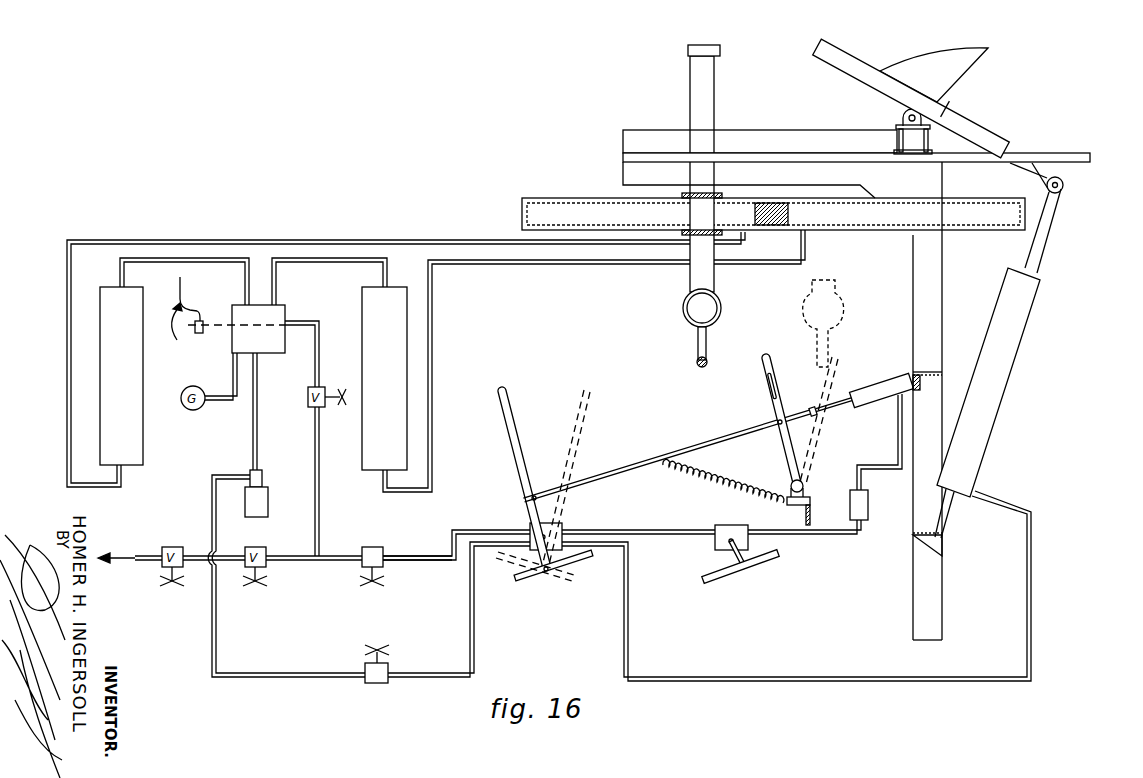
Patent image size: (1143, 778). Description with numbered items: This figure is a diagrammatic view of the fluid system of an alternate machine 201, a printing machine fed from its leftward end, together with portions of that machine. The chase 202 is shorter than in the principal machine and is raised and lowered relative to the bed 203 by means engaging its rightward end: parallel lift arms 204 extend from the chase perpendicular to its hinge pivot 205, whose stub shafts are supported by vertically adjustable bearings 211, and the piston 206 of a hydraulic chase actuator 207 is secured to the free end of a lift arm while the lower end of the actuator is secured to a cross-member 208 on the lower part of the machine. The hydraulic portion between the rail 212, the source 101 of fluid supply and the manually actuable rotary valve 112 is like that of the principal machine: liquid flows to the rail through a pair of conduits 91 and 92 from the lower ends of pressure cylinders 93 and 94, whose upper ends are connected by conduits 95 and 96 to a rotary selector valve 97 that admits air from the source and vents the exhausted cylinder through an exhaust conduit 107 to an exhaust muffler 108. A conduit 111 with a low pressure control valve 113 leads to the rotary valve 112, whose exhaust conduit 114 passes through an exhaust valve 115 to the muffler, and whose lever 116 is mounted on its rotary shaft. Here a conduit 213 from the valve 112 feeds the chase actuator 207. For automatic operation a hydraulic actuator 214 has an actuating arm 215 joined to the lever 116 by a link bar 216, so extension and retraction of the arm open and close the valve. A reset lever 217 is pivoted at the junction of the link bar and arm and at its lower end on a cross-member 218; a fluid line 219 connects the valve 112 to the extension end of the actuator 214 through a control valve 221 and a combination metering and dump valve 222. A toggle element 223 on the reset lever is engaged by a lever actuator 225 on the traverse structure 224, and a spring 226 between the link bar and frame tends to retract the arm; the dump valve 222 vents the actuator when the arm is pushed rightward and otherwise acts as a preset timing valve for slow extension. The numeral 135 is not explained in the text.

The conduit 91 is at (118, 240).
The conduit 92 is at (499, 264).
The pressure cylinder 93 is at (140, 424).
The pressure cylinder 94 is at (363, 306).
The conduit 95 is at (195, 258).
The conduit 96 is at (340, 258).
The rotary actuated selector valve 97 is at (272, 355).
The source of air pressure 101 is at (274, 562).
The exhaust conduit 107 is at (257, 430).
The exhaust muffler 108 is at (268, 495).
The conduit 111 is at (415, 560).
The rotary valve 112 is at (530, 525).
The low pressure control valve 113 is at (372, 547).
The exhaust conduit 114 is at (275, 677).
The exhaust valve 115 is at (388, 680).
The lever 116 is at (510, 415).
The switch arm 135 is at (180, 318).
The alternate machine 201 is at (1000, 117).
The chase 202 is at (868, 72).
The bed 203 is at (632, 144).
The lift arm 204 is at (1002, 150).
The hinge pivot 205 is at (905, 118).
The piston 206 is at (1045, 220).
The hydraulic chase actuator 207 is at (1008, 345).
The cross-member 208 is at (942, 542).
The bearing 211 is at (918, 112).
The rail 212 is at (530, 198).
The conduit 213 is at (752, 677).
The hydraulic actuator 214 is at (884, 388).
The actuating arm 215 is at (838, 409).
The link bar 216 is at (703, 447).
The reset lever 217 is at (786, 434).
The cross-member 218 is at (932, 368).
The fluid line 219 is at (656, 534).
The control valve 221 is at (718, 528).
The combination metering and dump valve 222 is at (866, 518).
The toggle element 223 is at (764, 360).
The traverse structure 224 is at (684, 284).
The lever actuator 225 is at (697, 362).
The spring 226 is at (686, 473).